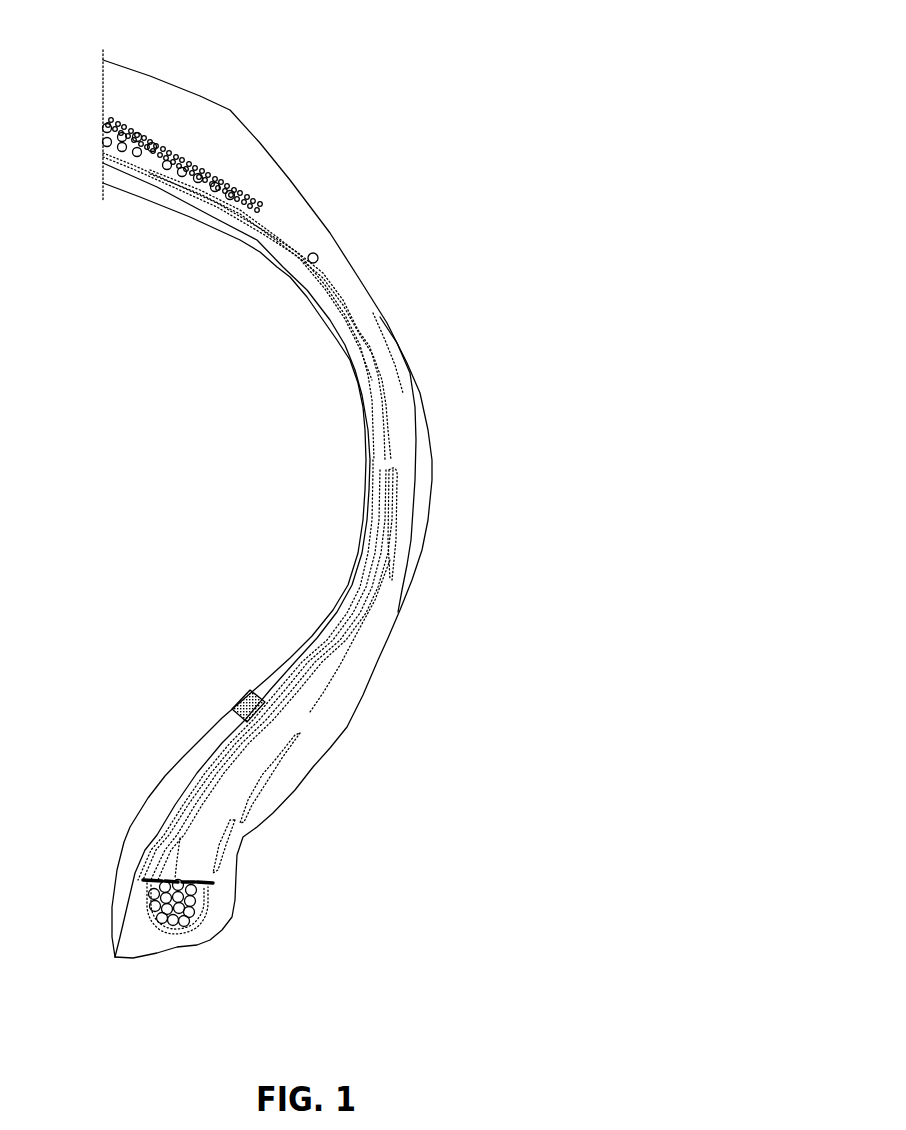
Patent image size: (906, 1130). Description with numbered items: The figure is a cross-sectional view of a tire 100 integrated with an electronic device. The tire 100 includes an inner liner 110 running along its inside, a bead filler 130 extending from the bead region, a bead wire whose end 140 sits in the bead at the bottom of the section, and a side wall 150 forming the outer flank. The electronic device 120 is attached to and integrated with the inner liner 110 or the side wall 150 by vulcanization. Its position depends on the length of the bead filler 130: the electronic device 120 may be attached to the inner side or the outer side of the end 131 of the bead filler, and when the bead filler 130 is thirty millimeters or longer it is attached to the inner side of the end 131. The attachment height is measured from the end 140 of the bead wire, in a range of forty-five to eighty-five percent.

The tire integrated with an electronic device 100 is at (450, 92).
The inner liner 110 is at (188, 753).
The electronic device 120 is at (247, 692).
The bead filler 130 is at (293, 720).
The end of the bead filler 131 is at (347, 628).
The end of the bead wire 140 is at (173, 925).
The side wall 150 is at (310, 747).